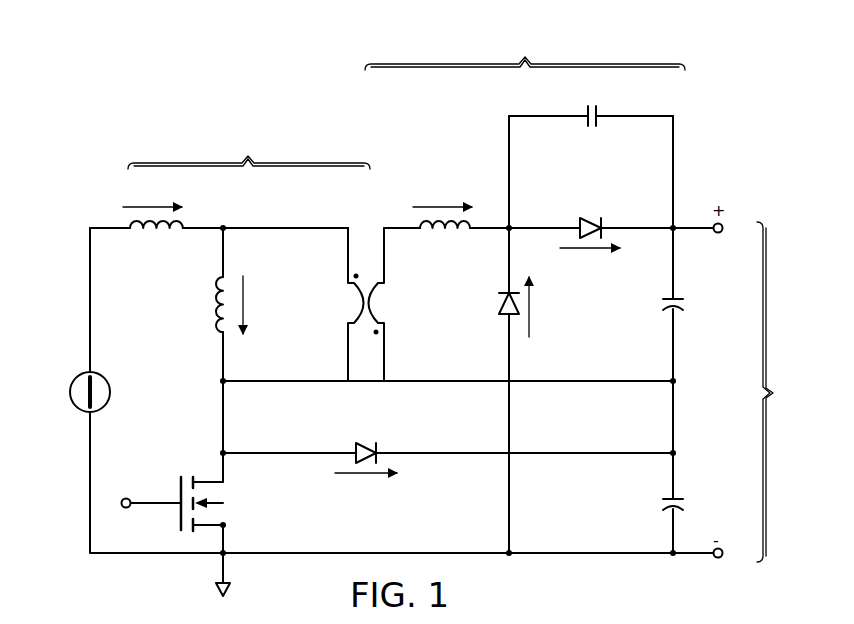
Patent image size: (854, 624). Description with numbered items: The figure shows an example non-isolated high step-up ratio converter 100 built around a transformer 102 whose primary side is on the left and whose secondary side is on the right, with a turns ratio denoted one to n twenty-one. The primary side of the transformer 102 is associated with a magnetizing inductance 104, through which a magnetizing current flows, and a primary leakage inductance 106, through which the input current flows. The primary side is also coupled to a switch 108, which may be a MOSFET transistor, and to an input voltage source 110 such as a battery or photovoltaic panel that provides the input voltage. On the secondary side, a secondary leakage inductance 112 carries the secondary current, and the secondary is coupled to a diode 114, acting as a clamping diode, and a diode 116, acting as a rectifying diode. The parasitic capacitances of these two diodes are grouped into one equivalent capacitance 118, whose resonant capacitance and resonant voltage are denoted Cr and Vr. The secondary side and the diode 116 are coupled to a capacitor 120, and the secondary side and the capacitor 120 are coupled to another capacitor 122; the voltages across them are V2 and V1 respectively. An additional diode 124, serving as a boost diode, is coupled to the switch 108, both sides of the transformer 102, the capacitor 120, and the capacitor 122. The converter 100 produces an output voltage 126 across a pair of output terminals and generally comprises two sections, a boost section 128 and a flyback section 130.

The non-isolated high step-up ratio converter 100 is at (222, 92).
The transformer 102 is at (360, 308).
The magnetizing inductance 104 is at (214, 306).
The primary leakage inductance 106 is at (132, 226).
The switch 108 is at (178, 517).
The input voltage source 110 is at (70, 392).
The secondary leakage inductance 112 is at (470, 225).
The diode 114 is at (500, 303).
The diode 116 is at (593, 226).
The equivalent capacitance 118 is at (587, 113).
The capacitor 120 is at (686, 306).
The capacitor 122 is at (686, 506).
The diode 124 is at (366, 449).
The output voltage 126 is at (785, 392).
The boost section 128 is at (249, 150).
The flyback section 130 is at (525, 50).